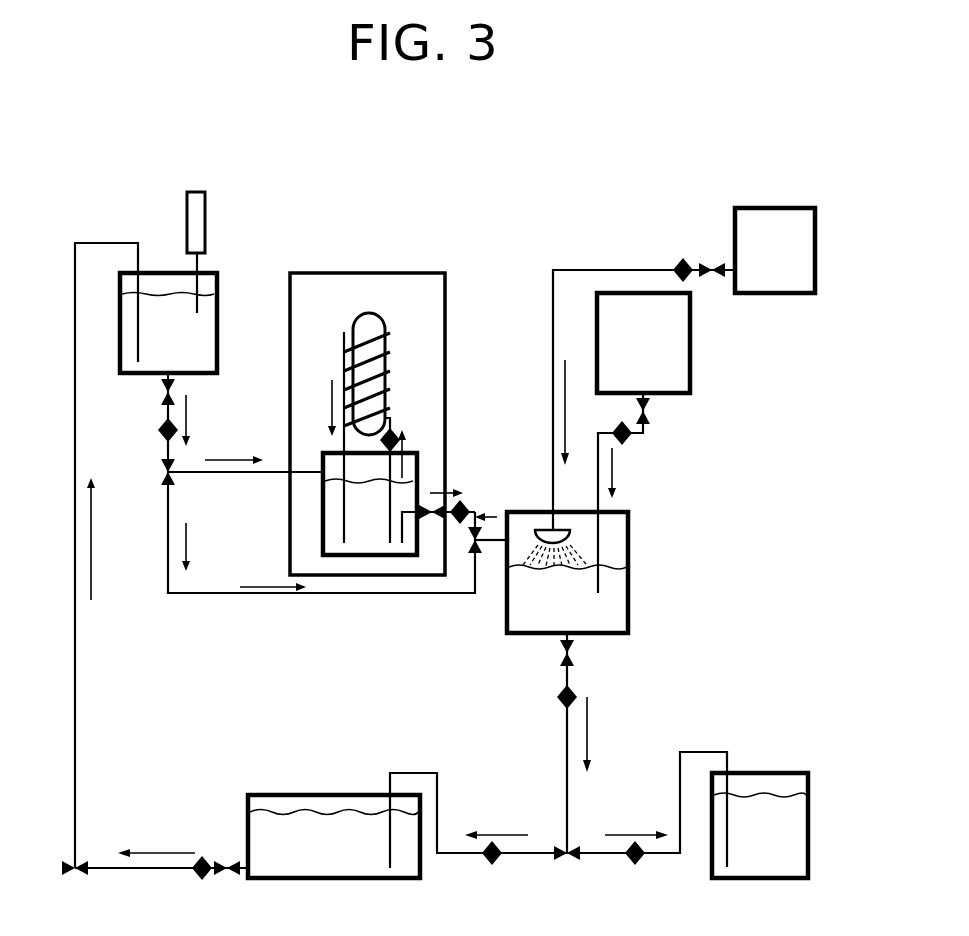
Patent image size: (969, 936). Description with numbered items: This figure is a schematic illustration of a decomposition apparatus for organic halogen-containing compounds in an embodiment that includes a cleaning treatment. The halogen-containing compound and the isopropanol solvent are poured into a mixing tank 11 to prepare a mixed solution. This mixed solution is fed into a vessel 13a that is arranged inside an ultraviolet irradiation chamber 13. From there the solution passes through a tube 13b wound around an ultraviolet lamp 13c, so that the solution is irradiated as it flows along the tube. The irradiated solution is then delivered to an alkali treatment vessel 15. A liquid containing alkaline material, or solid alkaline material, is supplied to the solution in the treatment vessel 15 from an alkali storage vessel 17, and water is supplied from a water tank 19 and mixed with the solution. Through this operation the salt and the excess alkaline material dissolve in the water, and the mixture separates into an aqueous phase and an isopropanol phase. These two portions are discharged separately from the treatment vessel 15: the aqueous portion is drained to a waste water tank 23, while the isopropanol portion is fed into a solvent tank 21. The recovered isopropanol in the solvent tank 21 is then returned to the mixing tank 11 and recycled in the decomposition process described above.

The mixing tank 11 is at (218, 296).
The ultraviolet irradiation chamber 13 is at (325, 271).
The vessel 13a is at (323, 527).
The tube 13b is at (388, 338).
The ultraviolet lamp 13c is at (378, 318).
The alkali treatment vessel 15 is at (630, 542).
The alkali storage vessel 17 is at (691, 350).
The water tank 19 is at (817, 243).
The solvent tank 21 is at (337, 880).
The waste water tank 23 is at (760, 880).